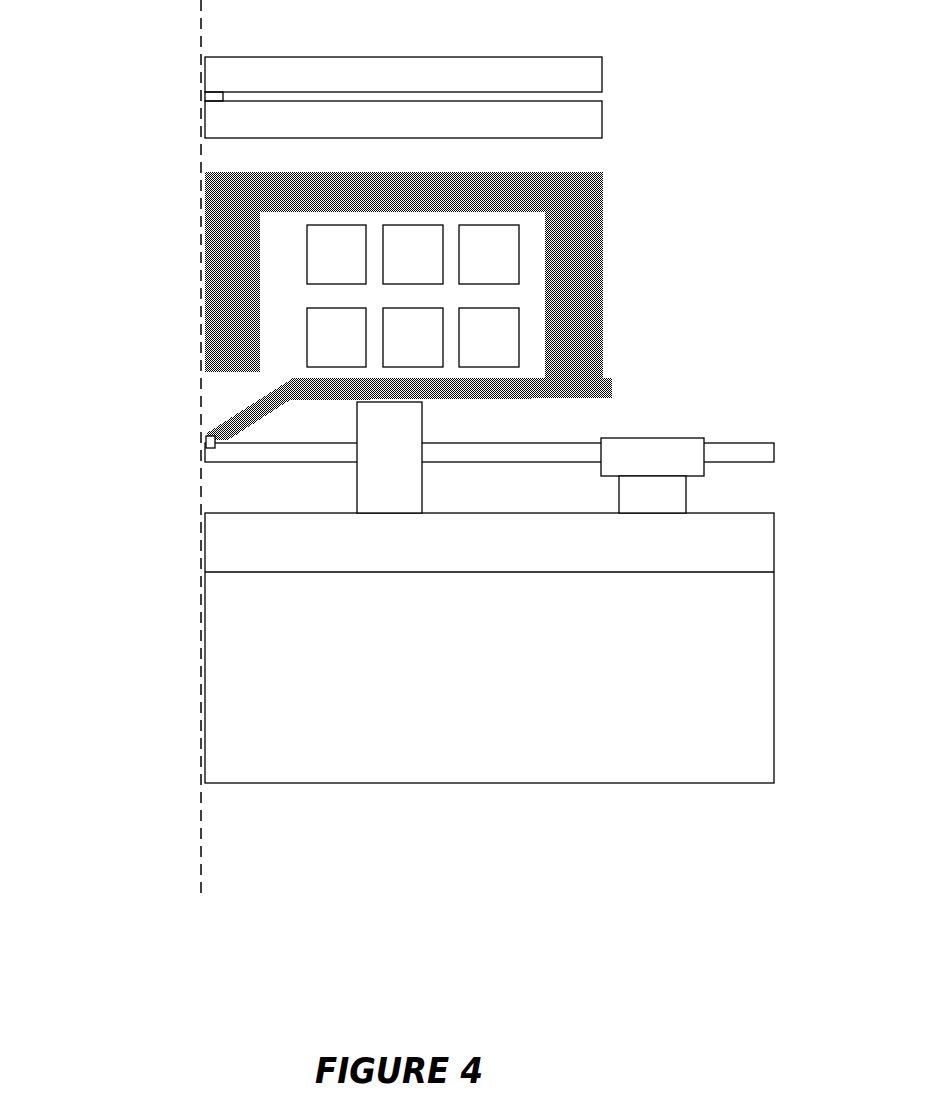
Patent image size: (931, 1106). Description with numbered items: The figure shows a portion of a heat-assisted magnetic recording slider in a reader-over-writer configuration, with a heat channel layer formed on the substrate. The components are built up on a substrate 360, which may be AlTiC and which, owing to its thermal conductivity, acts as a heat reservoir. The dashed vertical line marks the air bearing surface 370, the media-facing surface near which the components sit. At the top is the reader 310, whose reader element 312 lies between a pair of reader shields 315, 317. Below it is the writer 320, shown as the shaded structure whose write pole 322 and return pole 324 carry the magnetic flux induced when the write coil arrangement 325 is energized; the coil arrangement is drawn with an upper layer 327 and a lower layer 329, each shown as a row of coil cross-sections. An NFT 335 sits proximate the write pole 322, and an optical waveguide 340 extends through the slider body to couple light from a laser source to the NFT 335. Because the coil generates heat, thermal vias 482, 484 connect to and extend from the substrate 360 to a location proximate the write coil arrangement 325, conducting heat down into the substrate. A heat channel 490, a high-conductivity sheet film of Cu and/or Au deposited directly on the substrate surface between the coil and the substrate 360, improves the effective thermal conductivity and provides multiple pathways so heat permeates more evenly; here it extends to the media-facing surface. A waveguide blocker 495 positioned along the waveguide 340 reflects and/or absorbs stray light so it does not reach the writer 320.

The reader 310 is at (375, 97).
The reader element 312 is at (217, 95).
The reader shield 315 is at (602, 73).
The reader shield 317 is at (602, 120).
The writer 320 is at (354, 290).
The write pole 322 is at (212, 436).
The return pole 324 is at (215, 195).
The write coil arrangement 325 is at (490, 261).
The upper layer 327 is at (542, 243).
The lower layer 329 is at (540, 336).
The NFT 335 is at (213, 437).
The optical waveguide 340 is at (206, 450).
The substrate 360 is at (220, 650).
The air bearing surface 370 is at (200, 752).
The thermal via 482 is at (417, 480).
The thermal via 484 is at (665, 487).
The heat channel 490 is at (745, 538).
The waveguide blocker 495 is at (687, 438).